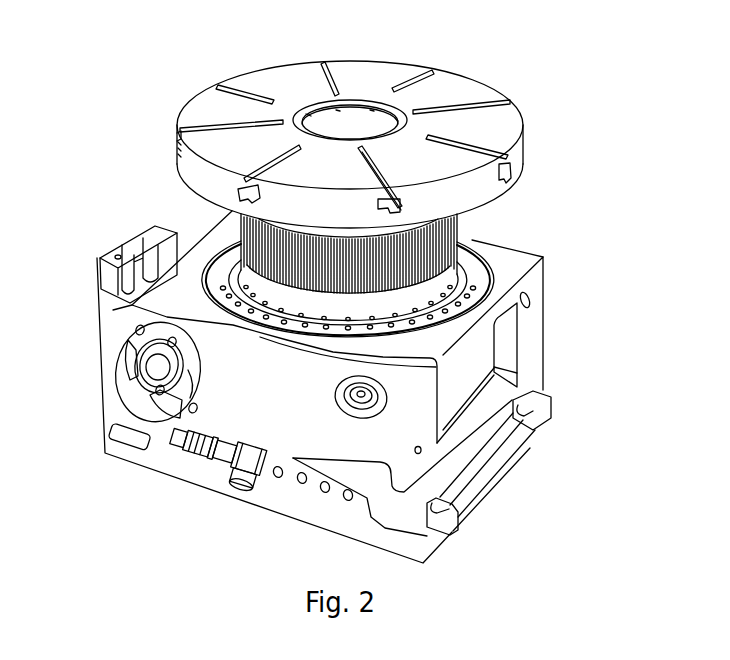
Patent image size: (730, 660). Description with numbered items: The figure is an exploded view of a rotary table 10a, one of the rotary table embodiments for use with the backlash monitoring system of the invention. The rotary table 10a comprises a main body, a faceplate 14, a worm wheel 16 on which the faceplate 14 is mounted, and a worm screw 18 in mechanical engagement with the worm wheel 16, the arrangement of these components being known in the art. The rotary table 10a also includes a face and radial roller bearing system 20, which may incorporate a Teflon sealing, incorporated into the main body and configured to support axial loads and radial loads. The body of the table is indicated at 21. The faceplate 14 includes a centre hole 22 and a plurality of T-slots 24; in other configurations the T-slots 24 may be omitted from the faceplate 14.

The rotary table 10a is at (549, 112).
The faceplate 14 is at (183, 167).
The worm wheel 16 is at (240, 213).
The worm screw 18 is at (255, 293).
The face & radial roller bearing system 20 is at (245, 322).
The housing 21 is at (176, 468).
The centre hole 22 is at (357, 127).
The T-slots 24 is at (197, 128).